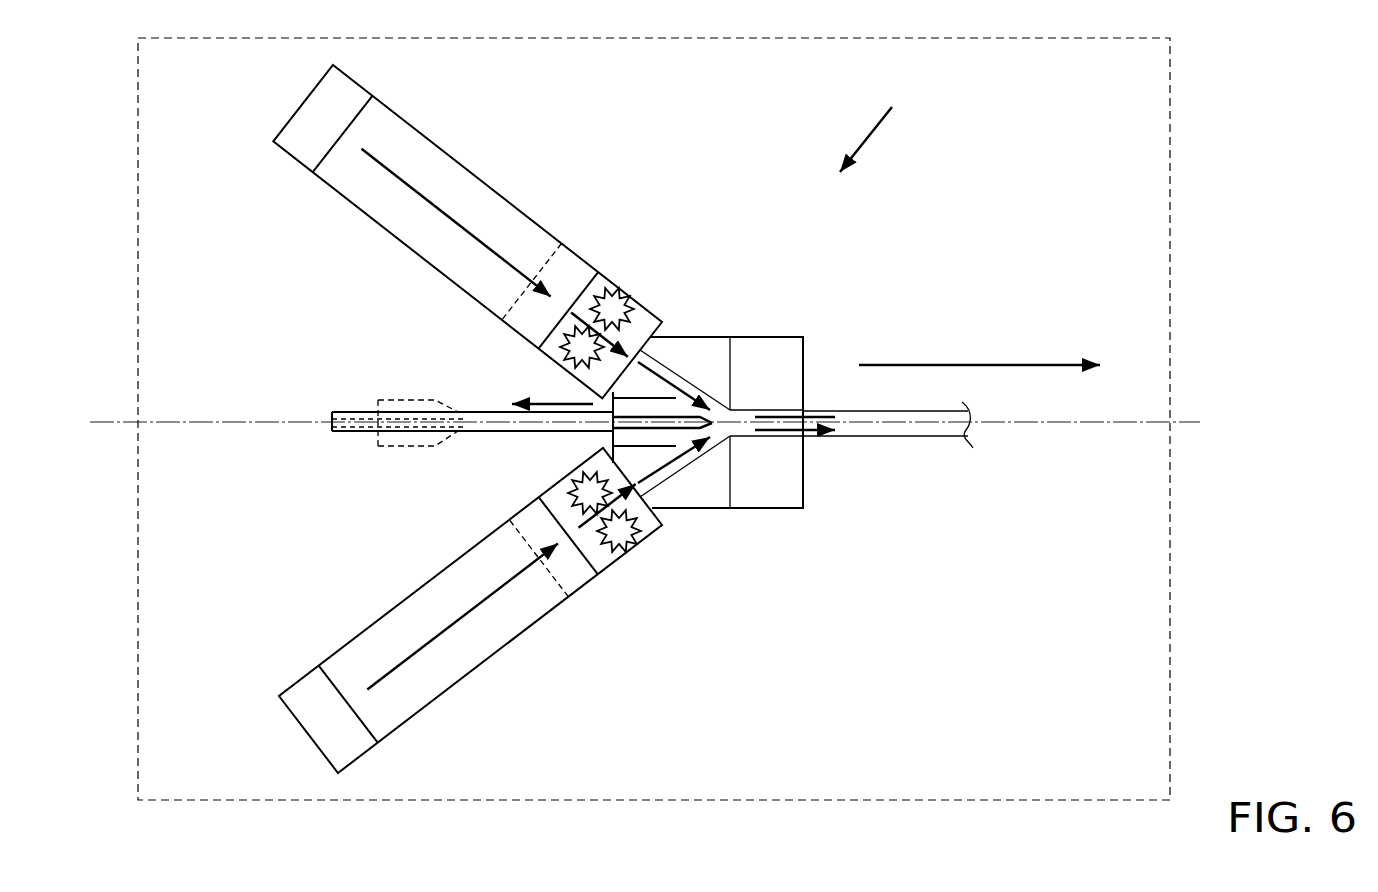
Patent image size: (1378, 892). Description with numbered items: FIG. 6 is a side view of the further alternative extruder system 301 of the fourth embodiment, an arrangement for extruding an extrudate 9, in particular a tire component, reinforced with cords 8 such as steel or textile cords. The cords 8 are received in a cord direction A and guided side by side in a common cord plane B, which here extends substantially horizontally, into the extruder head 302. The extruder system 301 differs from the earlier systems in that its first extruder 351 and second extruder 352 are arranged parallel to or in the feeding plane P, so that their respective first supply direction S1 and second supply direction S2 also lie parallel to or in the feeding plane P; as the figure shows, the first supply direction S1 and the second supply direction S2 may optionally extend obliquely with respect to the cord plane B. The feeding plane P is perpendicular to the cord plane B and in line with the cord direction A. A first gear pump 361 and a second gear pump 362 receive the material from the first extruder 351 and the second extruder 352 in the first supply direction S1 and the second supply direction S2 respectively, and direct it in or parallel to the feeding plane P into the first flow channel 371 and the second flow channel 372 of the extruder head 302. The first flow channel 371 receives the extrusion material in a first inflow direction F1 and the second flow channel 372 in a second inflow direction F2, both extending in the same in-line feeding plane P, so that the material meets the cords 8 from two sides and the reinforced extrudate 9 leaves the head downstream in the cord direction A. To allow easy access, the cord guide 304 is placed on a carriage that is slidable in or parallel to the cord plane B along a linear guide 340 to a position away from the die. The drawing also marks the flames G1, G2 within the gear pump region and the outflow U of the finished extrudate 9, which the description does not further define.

The extruder system 301 is at (880, 125).
The extruder head 302 is at (790, 337).
The cord guide 304 is at (610, 438).
The linear guide 340 is at (350, 410).
The first extruder 351 is at (467, 231).
The second extruder 352 is at (470, 610).
The first gear pump 361 is at (623, 285).
The second gear pump 362 is at (628, 551).
The first flow channel 371 is at (704, 392).
The second flow channel 372 is at (697, 460).
The cords 8 is at (110, 420).
The extrudate 9 is at (894, 437).
The first supply direction S1 is at (456, 197).
The second supply direction S2 is at (432, 614).
The first flame G1 is at (598, 273).
The second flame G2 is at (603, 573).
The first inflow direction F1 is at (664, 372).
The second inflow direction F2 is at (660, 469).
The cord direction A is at (979, 349).
The cord plane B is at (1063, 424).
The flow U is at (824, 450).
The feeding plane P is at (1100, 123).